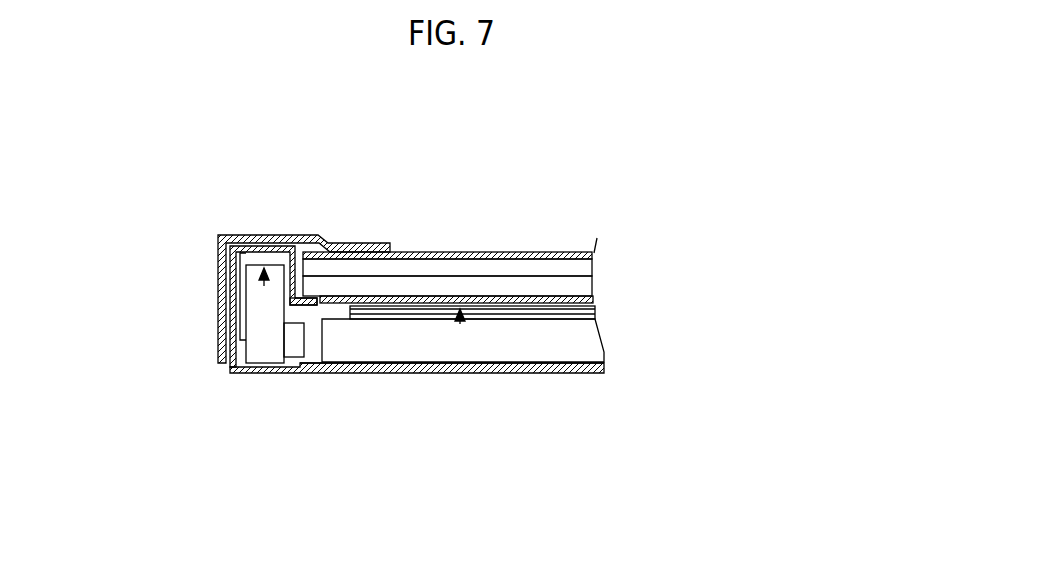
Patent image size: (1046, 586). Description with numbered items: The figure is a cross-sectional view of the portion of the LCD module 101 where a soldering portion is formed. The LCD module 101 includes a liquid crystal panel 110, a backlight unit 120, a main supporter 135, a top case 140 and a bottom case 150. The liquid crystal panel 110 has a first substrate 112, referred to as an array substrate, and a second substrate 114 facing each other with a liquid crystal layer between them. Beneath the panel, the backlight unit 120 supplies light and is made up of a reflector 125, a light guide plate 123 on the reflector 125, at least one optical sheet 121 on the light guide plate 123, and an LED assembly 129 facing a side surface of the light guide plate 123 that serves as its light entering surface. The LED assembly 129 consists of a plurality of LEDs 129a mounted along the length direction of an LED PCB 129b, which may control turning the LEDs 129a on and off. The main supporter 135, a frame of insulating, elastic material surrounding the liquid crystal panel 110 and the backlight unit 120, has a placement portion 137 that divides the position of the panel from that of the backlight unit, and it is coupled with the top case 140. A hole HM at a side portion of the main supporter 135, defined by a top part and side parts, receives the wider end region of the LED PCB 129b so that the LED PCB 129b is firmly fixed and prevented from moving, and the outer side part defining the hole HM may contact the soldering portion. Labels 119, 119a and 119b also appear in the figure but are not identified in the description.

The LCD module 101 is at (597, 121).
The top case 140 is at (275, 235).
The main supporter 135 is at (243, 237).
The placement portion 137 is at (315, 297).
The hole HM is at (262, 284).
The LED PCB 129b is at (262, 353).
The LEDs 129a is at (294, 352).
The LED assembly 129 is at (313, 474).
The upper bracket layer 119b is at (488, 252).
The lower bracket layer 119a is at (543, 296).
The display bracket 119 is at (553, 185).
The second substrate 114 is at (577, 267).
The first substrate 112 is at (577, 286).
The liquid crystal panel 110 is at (684, 262).
The optical sheet 121 is at (460, 324).
The light guide plate 123 is at (417, 340).
The reflector 125 is at (365, 363).
The bottom case 150 is at (563, 373).
The backlight unit 120 is at (498, 502).